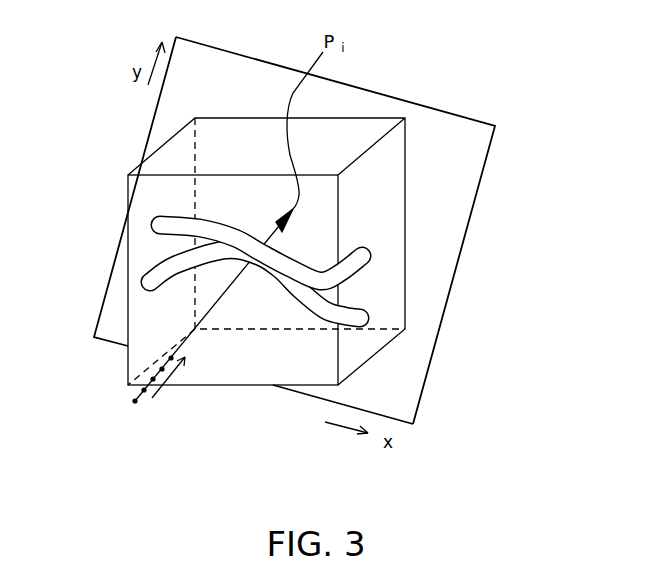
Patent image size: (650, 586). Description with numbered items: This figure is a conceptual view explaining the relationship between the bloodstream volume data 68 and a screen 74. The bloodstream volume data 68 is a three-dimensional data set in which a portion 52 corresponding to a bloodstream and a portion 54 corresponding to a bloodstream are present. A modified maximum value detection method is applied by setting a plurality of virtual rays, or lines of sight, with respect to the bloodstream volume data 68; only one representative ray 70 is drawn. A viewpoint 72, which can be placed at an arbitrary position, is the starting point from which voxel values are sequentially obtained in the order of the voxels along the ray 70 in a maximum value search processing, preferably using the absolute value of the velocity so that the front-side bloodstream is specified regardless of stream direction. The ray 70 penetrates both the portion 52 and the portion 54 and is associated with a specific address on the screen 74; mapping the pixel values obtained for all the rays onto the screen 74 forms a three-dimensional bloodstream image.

The portion corresponding to a bloodstream 52 is at (352, 250).
The portion corresponding to a bloodstream 54 is at (350, 330).
The bloodstream volume data 68 is at (406, 242).
The ray 70 is at (190, 332).
The viewpoint 72 is at (135, 401).
The screen 74 is at (486, 170).